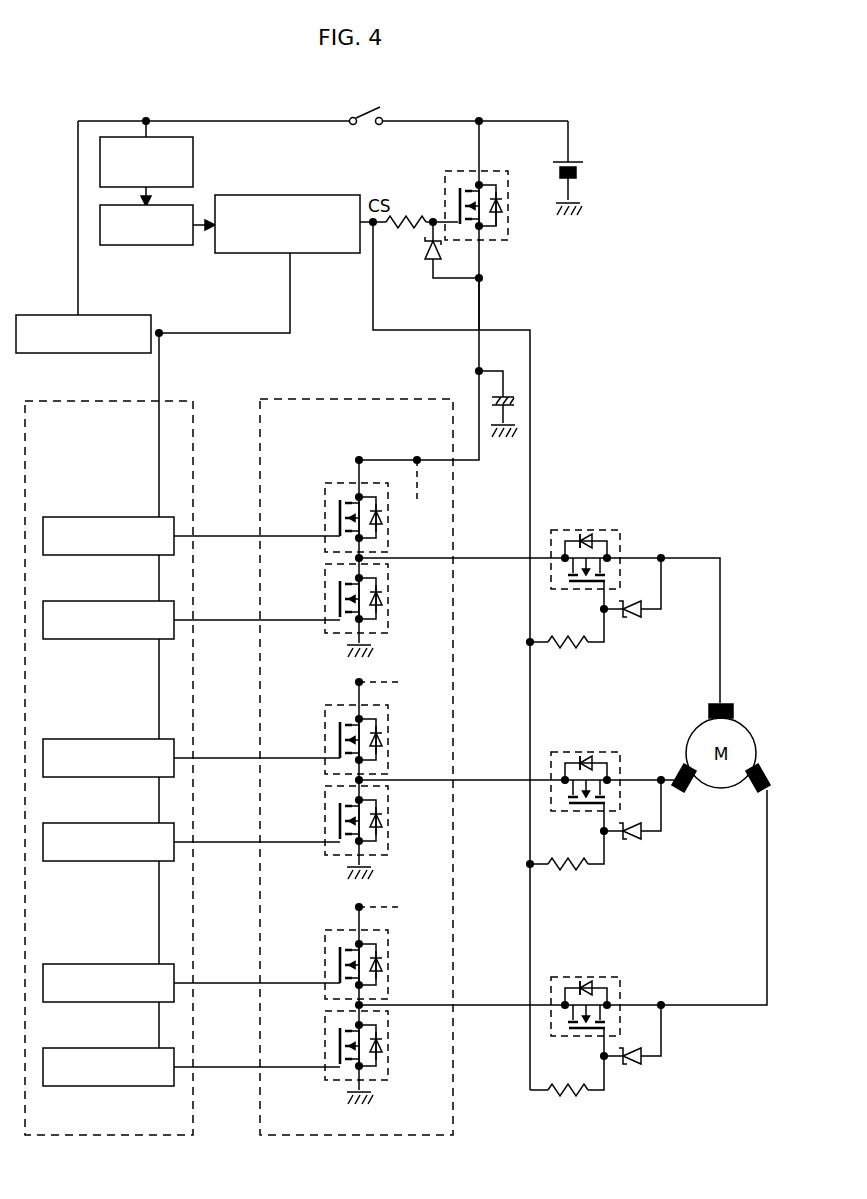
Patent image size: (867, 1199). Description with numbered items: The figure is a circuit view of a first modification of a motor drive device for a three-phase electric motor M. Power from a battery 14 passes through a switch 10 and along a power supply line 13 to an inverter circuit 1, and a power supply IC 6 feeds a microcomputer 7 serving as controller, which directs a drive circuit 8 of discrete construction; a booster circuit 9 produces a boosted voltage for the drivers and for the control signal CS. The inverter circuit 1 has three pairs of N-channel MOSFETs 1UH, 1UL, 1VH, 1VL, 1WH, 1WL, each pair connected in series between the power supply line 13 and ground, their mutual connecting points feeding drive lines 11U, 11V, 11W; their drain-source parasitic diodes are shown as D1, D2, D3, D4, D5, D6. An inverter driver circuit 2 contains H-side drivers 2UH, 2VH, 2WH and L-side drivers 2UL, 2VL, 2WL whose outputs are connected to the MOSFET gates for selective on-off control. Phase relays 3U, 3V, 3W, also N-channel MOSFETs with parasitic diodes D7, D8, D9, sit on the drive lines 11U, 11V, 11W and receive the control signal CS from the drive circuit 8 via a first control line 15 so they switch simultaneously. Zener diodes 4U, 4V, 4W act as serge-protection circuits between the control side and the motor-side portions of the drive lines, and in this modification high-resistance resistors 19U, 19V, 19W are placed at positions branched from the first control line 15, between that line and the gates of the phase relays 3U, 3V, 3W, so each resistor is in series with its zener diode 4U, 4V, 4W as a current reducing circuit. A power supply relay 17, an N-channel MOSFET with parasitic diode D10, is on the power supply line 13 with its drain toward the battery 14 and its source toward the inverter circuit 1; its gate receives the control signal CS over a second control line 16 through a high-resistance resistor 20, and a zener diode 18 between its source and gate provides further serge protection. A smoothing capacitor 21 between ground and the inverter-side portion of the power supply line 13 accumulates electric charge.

The inverter circuit 1 is at (340, 395).
The inverter driver circuit 2 is at (80, 400).
The power supply IC 6 is at (195, 170).
The microcomputer 7 is at (195, 207).
The drive circuit 8 is at (345, 195).
The booster circuit 9 is at (50, 313).
The switch 10 is at (356, 111).
The power supply line 13 is at (483, 306).
The battery 14 is at (586, 160).
The first control line 15 is at (533, 432).
The second control line 16 is at (416, 217).
The power supply relay 17 is at (500, 172).
The zener diode 18 is at (424, 282).
The high-resistance resistor 19U is at (570, 638).
The high-resistance resistor 19V is at (570, 860).
The high-resistance resistor 19W is at (570, 1086).
The high-resistance resistor 20 is at (408, 234).
The smoothing capacitor 21 is at (508, 385).
The MOSFET 1UH is at (324, 514).
The MOSFET 1UL is at (324, 595).
The MOSFET 1VH is at (324, 736).
The MOSFET 1VL is at (324, 817).
The MOSFET 1WH is at (324, 961).
The MOSFET 1WL is at (324, 1042).
The H-side driver 2UH is at (110, 516).
The L-side driver 2UL is at (110, 600).
The H-side driver 2VH is at (110, 738).
The L-side driver 2VL is at (110, 822).
The H-side driver 2WH is at (110, 963).
The L-side driver 2WL is at (110, 1047).
The phase relay 3U is at (588, 528).
The phase relay 3V is at (588, 750).
The phase relay 3W is at (588, 975).
The zener diode 4U is at (632, 620).
The zener diode 4V is at (632, 842).
The zener diode 4W is at (632, 1067).
The drive line 11U is at (500, 550).
The drive line 11V is at (500, 772).
The drive line 11W is at (500, 997).
The parasitic diode D1 is at (388, 518).
The parasitic diode D2 is at (388, 599).
The parasitic diode D3 is at (388, 740).
The parasitic diode D4 is at (388, 821).
The parasitic diode D5 is at (388, 965).
The parasitic diode D6 is at (388, 1046).
The parasitic diode D7 is at (584, 538).
The parasitic diode D8 is at (584, 760).
The parasitic diode D9 is at (584, 985).
The parasitic diode D10 is at (500, 208).